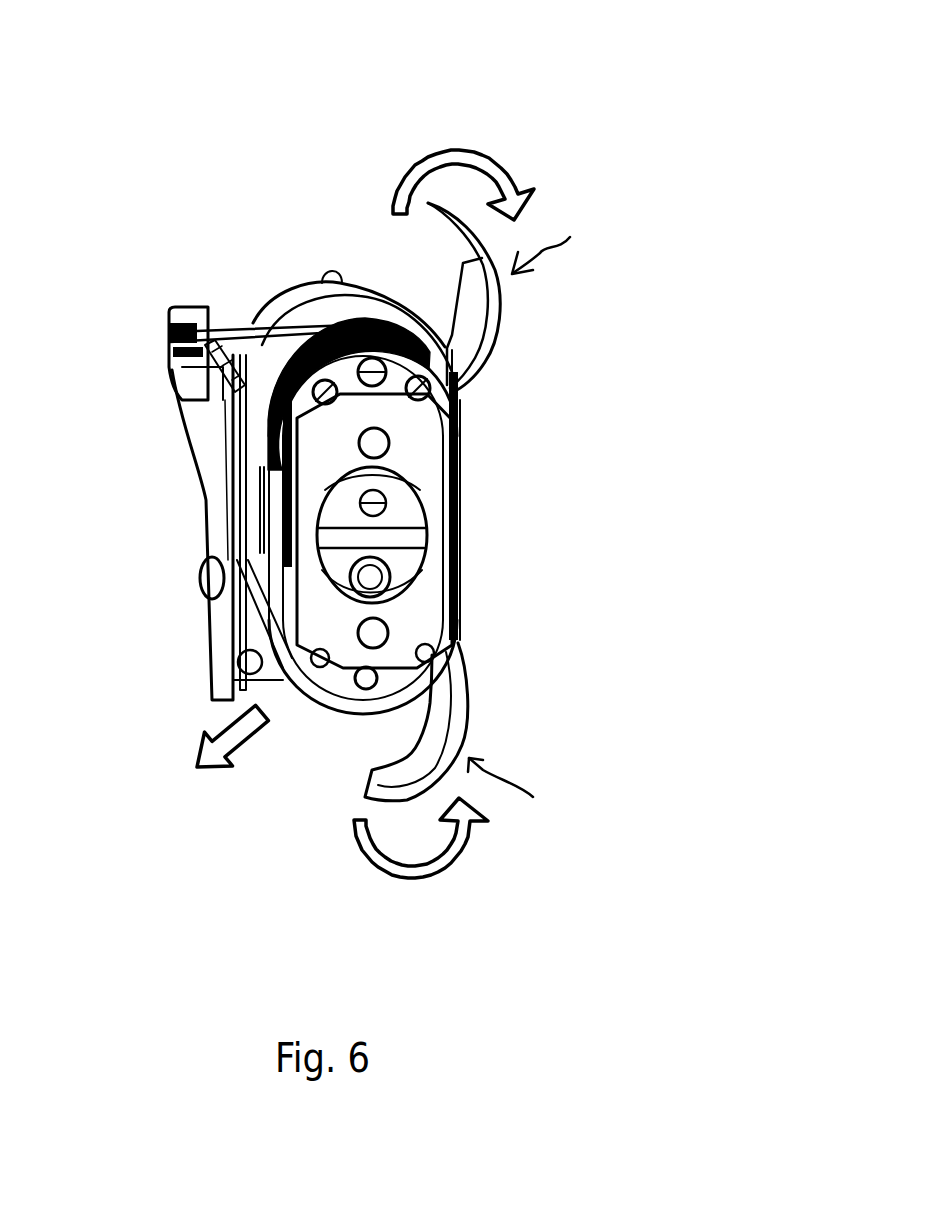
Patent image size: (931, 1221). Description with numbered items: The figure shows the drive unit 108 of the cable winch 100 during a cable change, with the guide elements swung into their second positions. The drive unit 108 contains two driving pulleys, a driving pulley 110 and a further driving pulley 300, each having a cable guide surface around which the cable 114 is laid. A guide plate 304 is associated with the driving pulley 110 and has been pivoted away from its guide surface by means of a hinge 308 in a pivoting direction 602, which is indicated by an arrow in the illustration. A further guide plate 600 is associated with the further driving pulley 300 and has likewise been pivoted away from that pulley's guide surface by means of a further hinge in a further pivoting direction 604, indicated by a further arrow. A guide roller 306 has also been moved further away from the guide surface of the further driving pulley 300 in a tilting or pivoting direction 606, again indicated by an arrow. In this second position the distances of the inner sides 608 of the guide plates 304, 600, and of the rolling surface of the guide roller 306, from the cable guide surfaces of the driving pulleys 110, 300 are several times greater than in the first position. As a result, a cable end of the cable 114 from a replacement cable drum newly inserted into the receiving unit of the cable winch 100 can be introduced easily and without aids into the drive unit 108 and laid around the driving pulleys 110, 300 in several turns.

The cable winch 100 is at (290, 230).
The drive unit 108 is at (512, 530).
The driving pulley 110 is at (460, 415).
The cable 114 is at (222, 330).
The further driving pulley 300 is at (458, 633).
The guide plate 304 is at (577, 240).
The guide roller 306 is at (240, 645).
The hinge 308 is at (460, 385).
The further guide plate 600 is at (526, 805).
The pivoting direction 602 is at (456, 150).
The further pivoting direction 604 is at (440, 880).
The tilting or pivoting direction 606 is at (195, 752).
The inner sides of the guide plates 608 is at (462, 300).